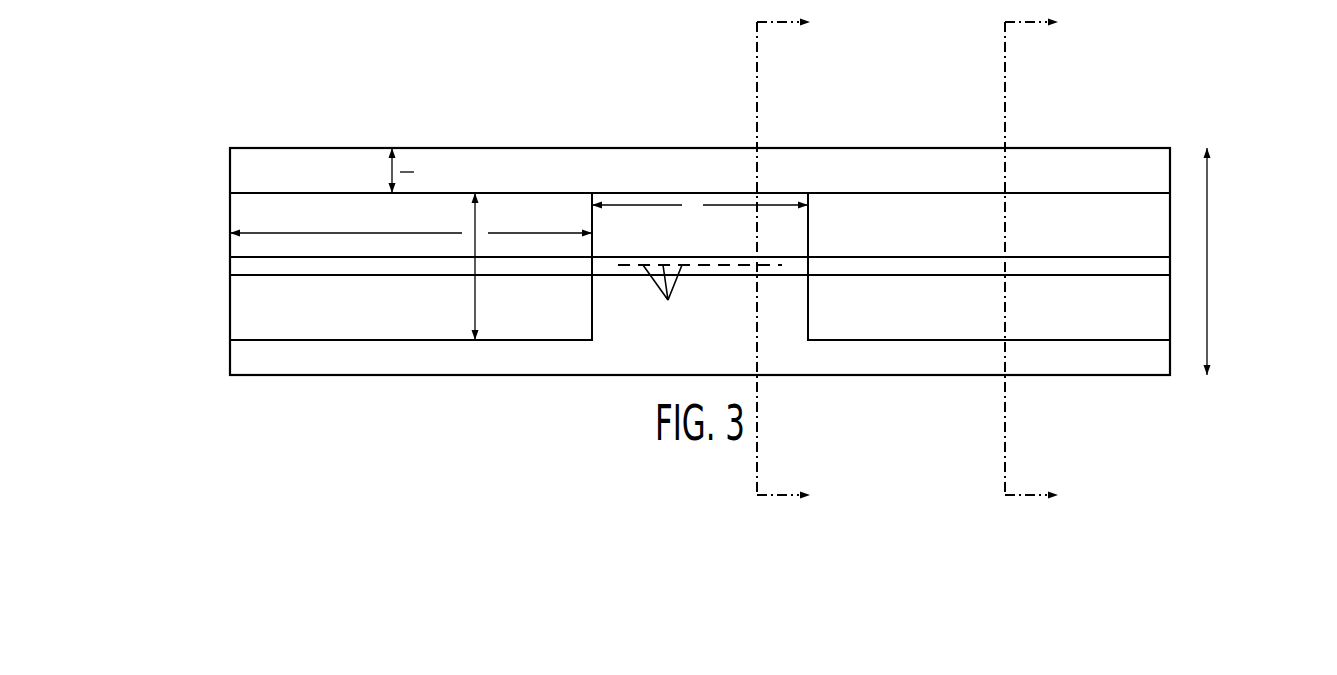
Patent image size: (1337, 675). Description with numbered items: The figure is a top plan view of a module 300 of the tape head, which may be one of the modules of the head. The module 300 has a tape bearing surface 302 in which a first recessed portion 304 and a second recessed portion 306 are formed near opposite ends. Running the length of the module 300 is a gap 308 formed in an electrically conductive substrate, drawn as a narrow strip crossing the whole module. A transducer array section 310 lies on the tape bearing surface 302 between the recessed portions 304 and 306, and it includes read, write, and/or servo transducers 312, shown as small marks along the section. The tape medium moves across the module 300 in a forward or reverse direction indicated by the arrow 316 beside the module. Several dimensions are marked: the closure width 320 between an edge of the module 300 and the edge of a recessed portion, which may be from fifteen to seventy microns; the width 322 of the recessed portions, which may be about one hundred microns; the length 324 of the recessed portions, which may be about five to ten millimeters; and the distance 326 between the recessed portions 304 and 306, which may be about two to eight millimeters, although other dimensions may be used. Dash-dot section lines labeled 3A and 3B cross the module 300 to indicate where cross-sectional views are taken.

The module 300 is at (630, 145).
The tape bearing surface 302 is at (338, 165).
The first recessed portion 304 is at (515, 192).
The second recessed portion 306 is at (882, 193).
The gap 308 is at (228, 266).
The transducer array section 310 is at (719, 276).
The transducers 312 is at (666, 302).
The arrow 316 is at (1208, 262).
The closure width 320 is at (396, 172).
The width 322 is at (473, 306).
The length 324 is at (495, 232).
The distance 326 is at (608, 203).
The section line 3A is at (803, 259).
The section line 3B is at (1051, 259).